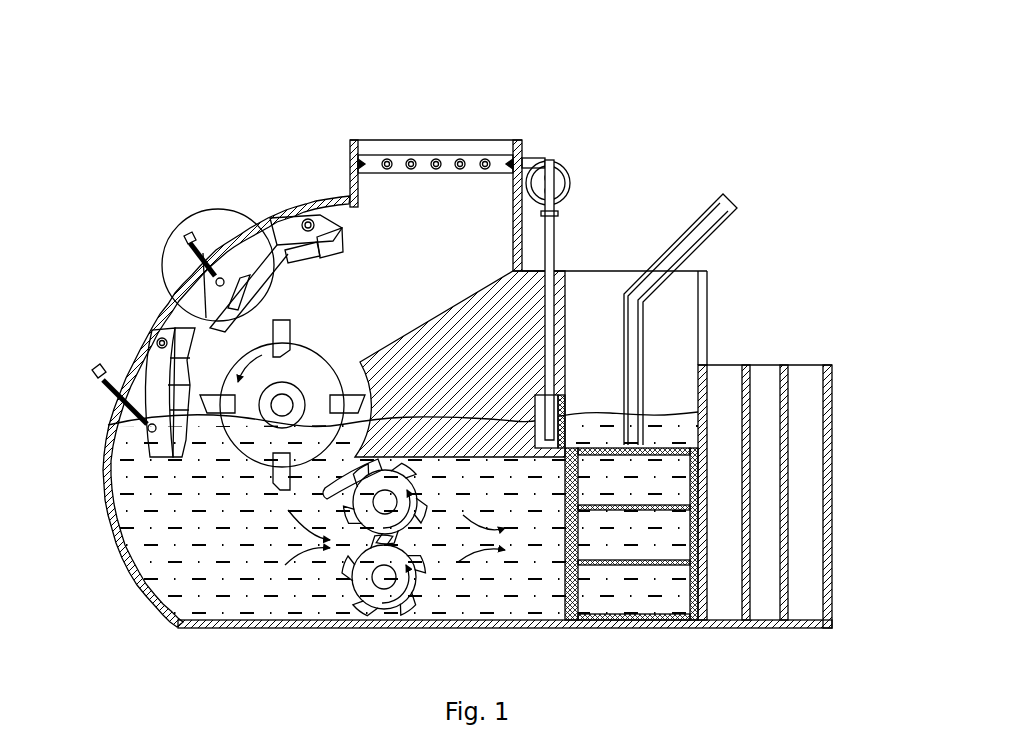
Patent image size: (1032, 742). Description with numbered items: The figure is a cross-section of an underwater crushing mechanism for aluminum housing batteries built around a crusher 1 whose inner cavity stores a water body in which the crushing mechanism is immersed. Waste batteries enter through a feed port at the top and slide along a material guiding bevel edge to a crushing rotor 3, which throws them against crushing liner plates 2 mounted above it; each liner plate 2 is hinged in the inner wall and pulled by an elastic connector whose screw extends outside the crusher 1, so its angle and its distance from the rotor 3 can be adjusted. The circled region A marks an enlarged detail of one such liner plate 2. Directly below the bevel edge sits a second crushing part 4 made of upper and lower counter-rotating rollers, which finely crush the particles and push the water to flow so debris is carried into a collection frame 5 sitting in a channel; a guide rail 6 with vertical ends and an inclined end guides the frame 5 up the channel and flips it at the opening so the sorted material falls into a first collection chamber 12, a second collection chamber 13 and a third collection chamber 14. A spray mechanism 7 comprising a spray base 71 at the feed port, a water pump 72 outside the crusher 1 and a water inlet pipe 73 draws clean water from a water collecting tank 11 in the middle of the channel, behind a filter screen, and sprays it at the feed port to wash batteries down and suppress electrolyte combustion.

The crusher 1 is at (270, 213).
The enlarged portion A is at (186, 222).
The crushing liner plate 2 is at (155, 368).
The crushing rotor 3 is at (247, 442).
The second crushing part 4 is at (365, 583).
The collection frame 5 is at (637, 563).
The guide rail 6 is at (702, 233).
The spray mechanism 7 is at (536, 227).
The spray base 71 is at (447, 156).
The water pump 72 is at (535, 180).
The water inlet pipe 73 is at (552, 253).
The water collecting tank 11 is at (541, 443).
The first collection chamber 12 is at (726, 586).
The second collection chamber 13 is at (768, 604).
The third collection chamber 14 is at (807, 563).